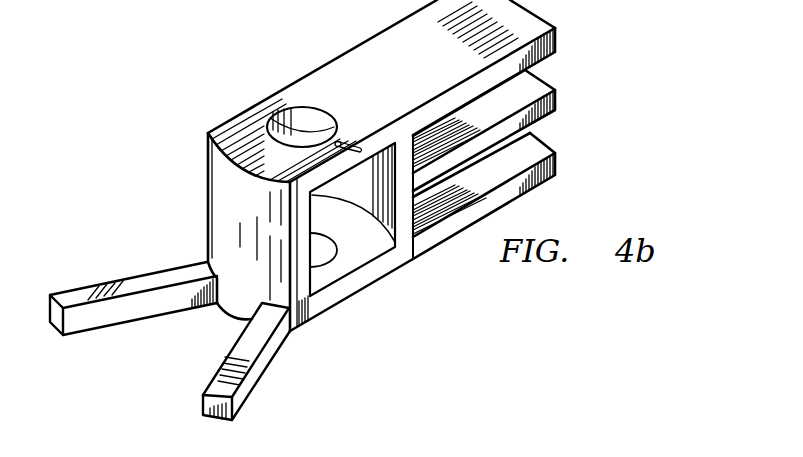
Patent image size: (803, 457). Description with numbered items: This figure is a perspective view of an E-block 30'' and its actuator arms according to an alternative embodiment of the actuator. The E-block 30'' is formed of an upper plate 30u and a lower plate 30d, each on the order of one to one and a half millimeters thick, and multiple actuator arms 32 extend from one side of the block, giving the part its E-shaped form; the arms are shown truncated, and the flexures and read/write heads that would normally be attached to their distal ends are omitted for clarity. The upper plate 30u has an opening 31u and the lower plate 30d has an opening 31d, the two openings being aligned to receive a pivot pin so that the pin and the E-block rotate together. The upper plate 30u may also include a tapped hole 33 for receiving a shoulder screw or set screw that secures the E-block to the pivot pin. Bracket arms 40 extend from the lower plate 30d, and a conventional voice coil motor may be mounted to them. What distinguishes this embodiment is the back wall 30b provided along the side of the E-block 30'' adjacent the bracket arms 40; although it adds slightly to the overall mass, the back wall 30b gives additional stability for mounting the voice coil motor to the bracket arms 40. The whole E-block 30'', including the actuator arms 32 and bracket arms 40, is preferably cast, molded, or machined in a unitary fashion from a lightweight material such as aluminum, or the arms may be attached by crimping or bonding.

The E-block 30'' is at (381, 165).
The upper plate 30u is at (220, 133).
The back wall 30b is at (224, 209).
The lower plate 30d is at (377, 268).
The opening 31u is at (302, 118).
The opening 31d is at (338, 258).
The actuator arms 32 is at (556, 33).
The tapped hole 33 is at (358, 150).
The bracket arms 40 is at (70, 300).